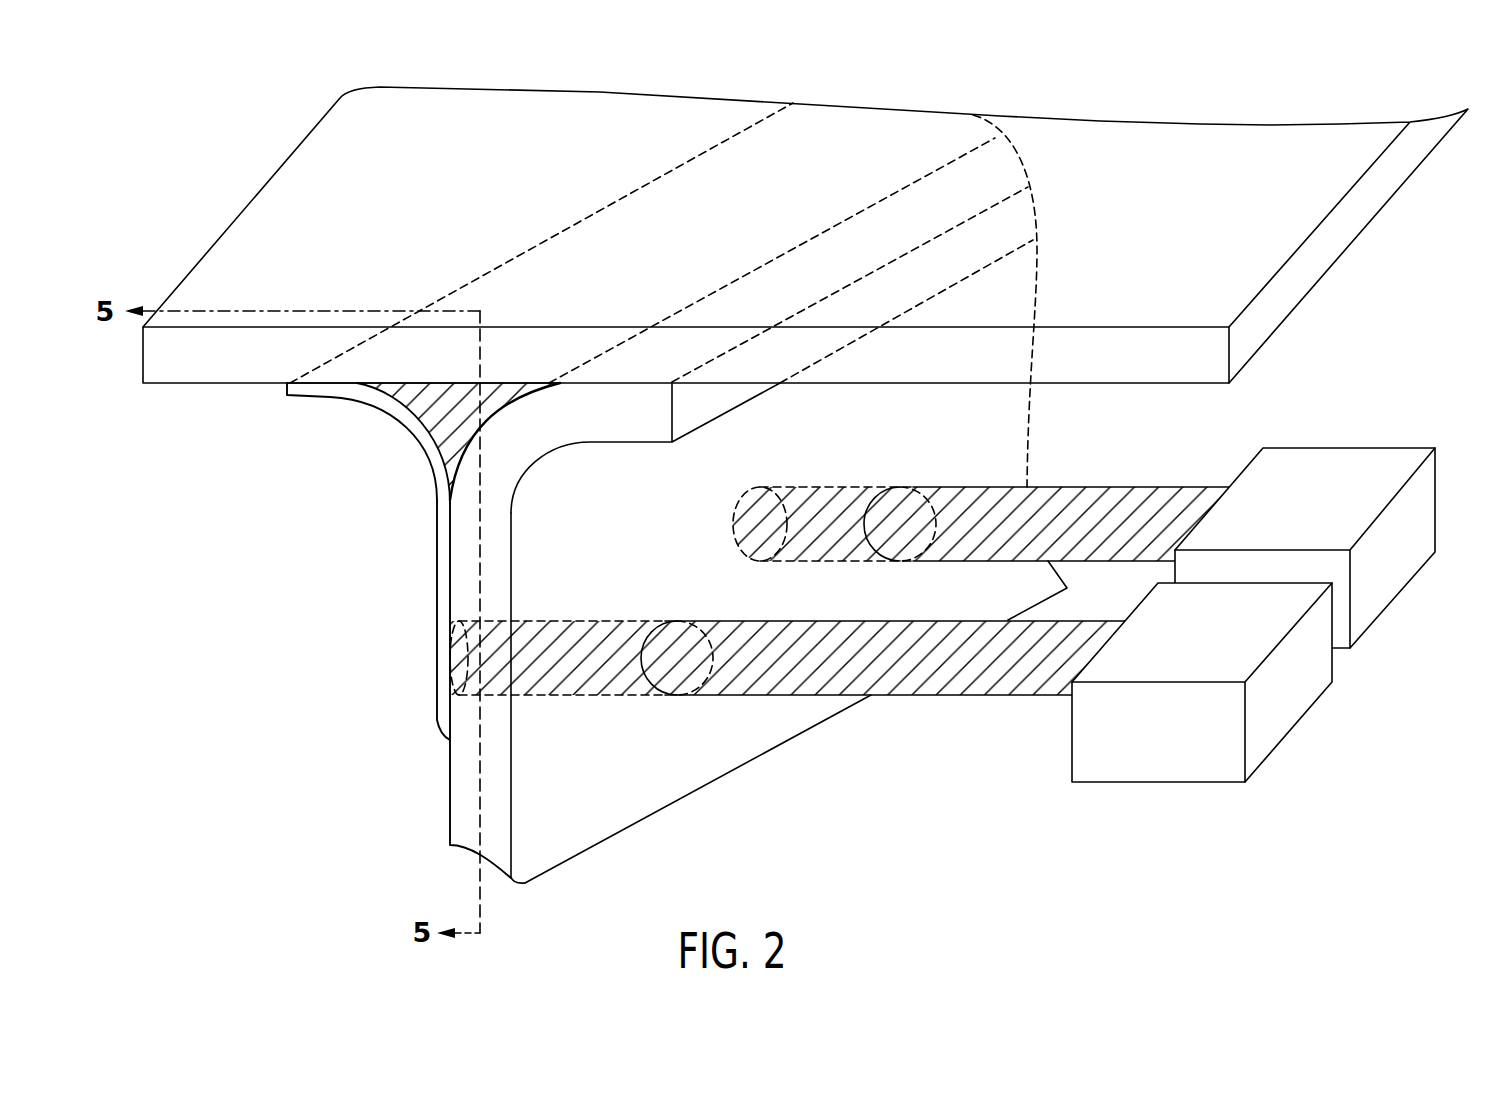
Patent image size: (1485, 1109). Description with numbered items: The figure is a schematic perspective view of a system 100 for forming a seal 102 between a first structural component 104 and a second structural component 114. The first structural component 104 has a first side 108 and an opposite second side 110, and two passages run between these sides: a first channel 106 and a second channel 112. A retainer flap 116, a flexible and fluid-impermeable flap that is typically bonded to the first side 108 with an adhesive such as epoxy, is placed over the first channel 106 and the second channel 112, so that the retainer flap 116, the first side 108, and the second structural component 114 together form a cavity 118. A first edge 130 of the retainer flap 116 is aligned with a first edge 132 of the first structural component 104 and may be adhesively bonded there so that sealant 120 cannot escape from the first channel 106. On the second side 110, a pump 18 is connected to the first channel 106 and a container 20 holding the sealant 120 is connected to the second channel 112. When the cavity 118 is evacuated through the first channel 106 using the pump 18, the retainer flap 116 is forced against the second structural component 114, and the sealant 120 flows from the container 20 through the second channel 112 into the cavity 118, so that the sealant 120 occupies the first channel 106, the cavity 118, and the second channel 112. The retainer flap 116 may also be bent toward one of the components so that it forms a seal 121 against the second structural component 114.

The system 100 is at (805, 507).
The seal 102 is at (540, 425).
The first structural component 104 is at (500, 800).
The first channel 106 is at (615, 712).
The first side 108 is at (418, 689).
The second side 110 is at (765, 737).
The second channel 112 is at (868, 479).
The second structural component 114 is at (200, 365).
The retainer flap 116 is at (312, 397).
The cavity 118 is at (427, 373).
The sealant 120 is at (428, 416).
The seal 121 is at (348, 382).
The first edge 130 is at (438, 660).
The first edge 132 is at (448, 812).
The pump 18 is at (1145, 768).
The container 20 is at (1338, 462).